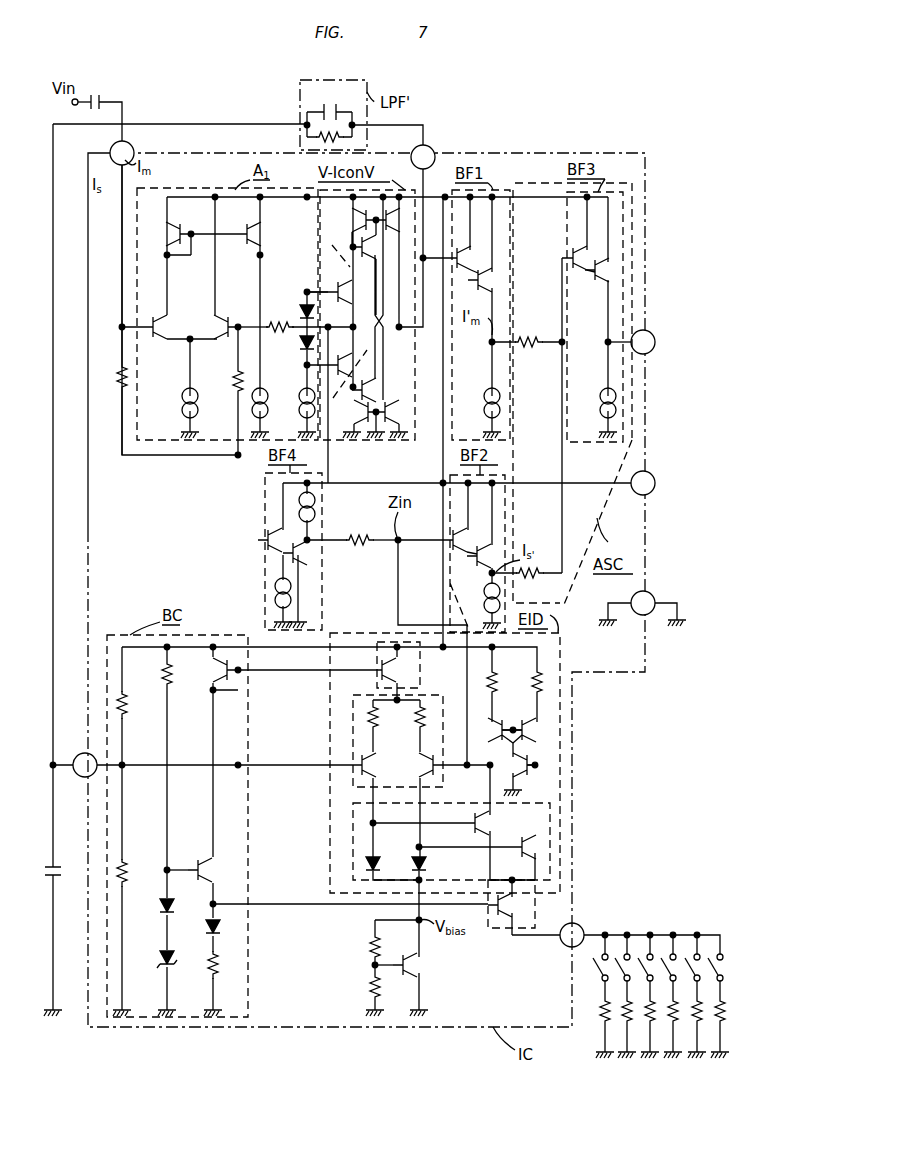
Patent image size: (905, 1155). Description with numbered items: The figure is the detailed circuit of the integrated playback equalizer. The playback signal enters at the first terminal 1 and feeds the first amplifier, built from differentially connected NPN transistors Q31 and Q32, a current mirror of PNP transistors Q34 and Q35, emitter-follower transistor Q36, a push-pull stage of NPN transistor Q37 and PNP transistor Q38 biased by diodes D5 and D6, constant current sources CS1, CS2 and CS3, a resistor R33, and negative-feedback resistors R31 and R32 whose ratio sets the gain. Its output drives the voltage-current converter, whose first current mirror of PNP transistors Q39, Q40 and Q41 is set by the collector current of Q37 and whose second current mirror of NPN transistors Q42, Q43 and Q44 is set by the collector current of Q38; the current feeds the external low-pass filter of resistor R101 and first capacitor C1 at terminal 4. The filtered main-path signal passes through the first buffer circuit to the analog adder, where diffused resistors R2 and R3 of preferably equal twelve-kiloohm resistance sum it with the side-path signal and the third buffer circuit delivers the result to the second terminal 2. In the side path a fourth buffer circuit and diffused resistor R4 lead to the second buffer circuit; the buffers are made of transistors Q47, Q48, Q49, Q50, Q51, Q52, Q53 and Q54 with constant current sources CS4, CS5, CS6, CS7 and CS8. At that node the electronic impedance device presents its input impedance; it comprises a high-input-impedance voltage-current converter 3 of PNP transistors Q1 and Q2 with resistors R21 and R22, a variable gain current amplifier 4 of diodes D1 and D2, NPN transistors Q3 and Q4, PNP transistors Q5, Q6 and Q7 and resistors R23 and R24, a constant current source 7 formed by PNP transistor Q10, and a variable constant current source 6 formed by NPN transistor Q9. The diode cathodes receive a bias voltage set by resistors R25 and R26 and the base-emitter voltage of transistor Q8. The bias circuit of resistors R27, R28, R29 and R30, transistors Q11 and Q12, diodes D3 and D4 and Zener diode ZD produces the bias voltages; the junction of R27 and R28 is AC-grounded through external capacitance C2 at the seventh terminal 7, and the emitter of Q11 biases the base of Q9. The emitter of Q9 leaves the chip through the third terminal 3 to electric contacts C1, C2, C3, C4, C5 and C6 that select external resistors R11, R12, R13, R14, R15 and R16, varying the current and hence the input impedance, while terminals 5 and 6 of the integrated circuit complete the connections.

The first terminal 1 is at (174, 298).
The second terminal 2 is at (631, 342).
The voltage-current converter 3 is at (335, 696).
The variable gain current amplifier 4 is at (333, 820).
The Vcc terminal 5 is at (496, 483).
The variable constant current source 6 is at (488, 964).
The constant current source 7 is at (450, 664).
The first capacitor C1 is at (602, 978).
The external capacitance C2 is at (620, 975).
The electric contact C3 is at (644, 975).
The electric contact C4 is at (667, 975).
The electric contact C5 is at (690, 975).
The electric contact C6 is at (726, 972).
The external resistor R101 is at (300, 137).
The semiconductor diffused resistor R2 is at (527, 332).
The semiconductor diffused resistor R3 is at (527, 585).
The semiconductor diffused resistor R4 is at (372, 531).
The external resistor R11 is at (591, 1013).
The external resistor R12 is at (622, 1020).
The external resistor R13 is at (646, 1020).
The external resistor R14 is at (670, 1020).
The external resistor R15 is at (694, 1020).
The external resistor R16 is at (732, 1013).
The semiconductor diffused resistor R21 is at (368, 718).
The semiconductor diffused resistor R22 is at (417, 718).
The semiconductor diffused resistor R23 is at (519, 687).
The semiconductor diffused resistor R24 is at (503, 678).
The semiconductor diffused resistor R25 is at (370, 948).
The semiconductor diffused resistor R26 is at (370, 986).
The semiconductor diffused resistor R27 is at (134, 706).
The semiconductor diffused resistor R28 is at (134, 874).
The semiconductor diffused resistor R29 is at (150, 675).
The semiconductor diffused resistor R30 is at (224, 966).
The semiconductor diffused resistor R31 is at (266, 317).
The semiconductor diffused resistor R32 is at (236, 375).
The resistor R33 is at (108, 310).
The PNP-type transistor Q1 is at (373, 758).
The PNP-type transistor Q2 is at (432, 770).
The NPN-type transistor Q3 is at (487, 828).
The NPN-type transistor Q4 is at (520, 850).
The PNP-type transistor Q5 is at (495, 722).
The PNP-type transistor Q6 is at (538, 727).
The PNP-type transistor Q7 is at (524, 785).
The transistor Q8 is at (407, 967).
The NPN-type transistor Q9 is at (509, 906).
The PNP-type transistor Q10 is at (368, 646).
The transistor Q11 is at (202, 871).
The transistor Q12 is at (207, 671).
The NPN-type transistor Q31 is at (169, 326).
The NPN-type transistor Q32 is at (228, 318).
The PNP-type transistor Q34 is at (182, 227).
The PNP-type transistor Q35 is at (239, 234).
The emitter-follower NPN-type transistor Q36 is at (330, 284).
The NPN-type transistor Q37 is at (336, 283).
The PNP-type transistor Q38 is at (352, 362).
The PNP-type transistor Q39 is at (352, 244).
The PNP-type transistor Q40 is at (355, 228).
The PNP-type transistor Q41 is at (395, 222).
The NPN-type transistor Q42 is at (354, 418).
The NPN-type transistor Q43 is at (376, 390).
The NPN-type transistor Q44 is at (395, 412).
The transistor Q47 is at (472, 256).
The transistor Q48 is at (492, 284).
The transistor Q49 is at (447, 538).
The transistor Q50 is at (490, 550).
The transistor Q51 is at (572, 252).
The transistor Q52 is at (598, 282).
The transistor Q53 is at (262, 536).
The transistor Q54 is at (305, 558).
The diode D1 is at (380, 856).
The diode D2 is at (430, 867).
The diode D3 is at (175, 900).
The diode D4 is at (223, 925).
The bias diode D5 is at (317, 315).
The bias diode D6 is at (293, 346).
The Zener diode ZD is at (178, 961).
The constant current source CS1 is at (182, 403).
The constant current source CS2 is at (252, 410).
The constant current source CS3 is at (299, 404).
The constant current source CS4 is at (484, 405).
The constant current source CS5 is at (484, 602).
The constant current source CS6 is at (600, 408).
The constant current source CS7 is at (272, 600).
The constant current source CS8 is at (316, 504).